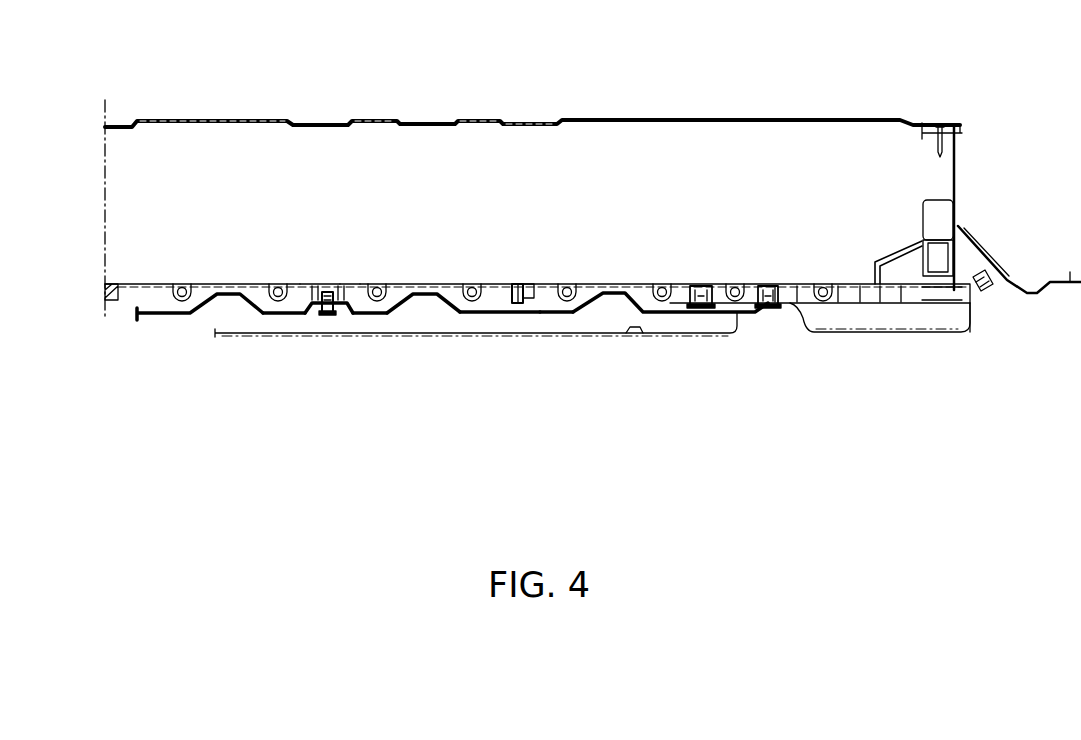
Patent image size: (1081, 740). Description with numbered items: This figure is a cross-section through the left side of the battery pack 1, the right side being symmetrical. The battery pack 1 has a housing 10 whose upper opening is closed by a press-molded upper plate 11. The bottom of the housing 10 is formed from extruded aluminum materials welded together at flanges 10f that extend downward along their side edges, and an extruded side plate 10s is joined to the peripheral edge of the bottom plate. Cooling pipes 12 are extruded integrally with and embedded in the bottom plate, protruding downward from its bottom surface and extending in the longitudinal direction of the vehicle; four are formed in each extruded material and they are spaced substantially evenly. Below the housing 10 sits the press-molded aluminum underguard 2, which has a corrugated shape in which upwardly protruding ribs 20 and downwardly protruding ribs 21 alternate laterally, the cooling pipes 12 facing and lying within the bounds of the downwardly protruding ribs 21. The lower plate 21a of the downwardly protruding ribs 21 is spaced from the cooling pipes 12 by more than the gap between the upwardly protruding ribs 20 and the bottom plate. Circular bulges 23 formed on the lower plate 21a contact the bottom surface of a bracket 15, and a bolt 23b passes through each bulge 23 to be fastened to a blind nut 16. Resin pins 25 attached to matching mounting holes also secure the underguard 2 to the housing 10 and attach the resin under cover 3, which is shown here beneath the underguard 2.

The battery pack 1 is at (753, 98).
The underguard 2 is at (253, 290).
The under cover 3 is at (215, 342).
The housing 10 is at (935, 165).
The flange 10f is at (533, 287).
The side plate 10s is at (957, 207).
The upper plate 11 is at (645, 118).
The cooling pipe 12 is at (472, 290).
The bracket 15 is at (347, 287).
The blind nut 16 is at (318, 287).
The upwardly protruding rib 20 is at (613, 305).
The downwardly protruding rib 21 is at (564, 324).
The lower plate 21a is at (273, 317).
The bulge 23 is at (314, 325).
The bolt 23b is at (330, 315).
The resin pin 25 is at (703, 308).